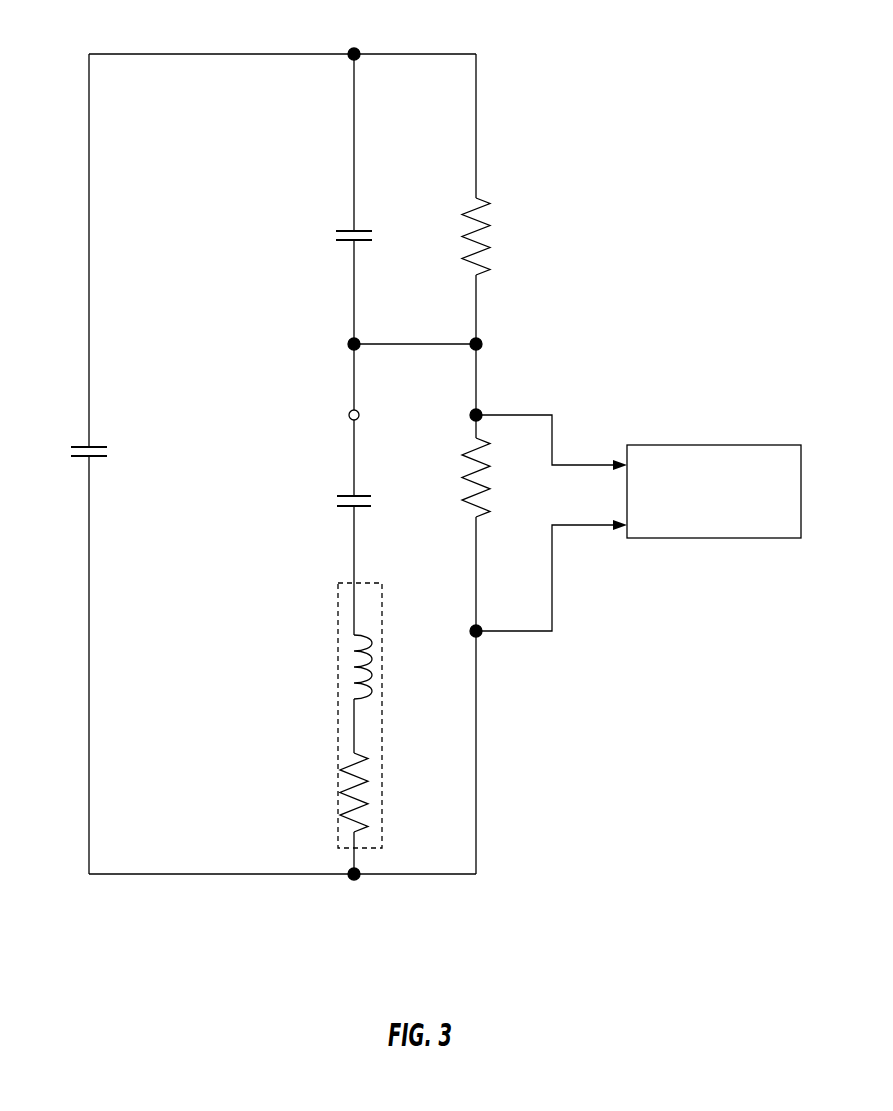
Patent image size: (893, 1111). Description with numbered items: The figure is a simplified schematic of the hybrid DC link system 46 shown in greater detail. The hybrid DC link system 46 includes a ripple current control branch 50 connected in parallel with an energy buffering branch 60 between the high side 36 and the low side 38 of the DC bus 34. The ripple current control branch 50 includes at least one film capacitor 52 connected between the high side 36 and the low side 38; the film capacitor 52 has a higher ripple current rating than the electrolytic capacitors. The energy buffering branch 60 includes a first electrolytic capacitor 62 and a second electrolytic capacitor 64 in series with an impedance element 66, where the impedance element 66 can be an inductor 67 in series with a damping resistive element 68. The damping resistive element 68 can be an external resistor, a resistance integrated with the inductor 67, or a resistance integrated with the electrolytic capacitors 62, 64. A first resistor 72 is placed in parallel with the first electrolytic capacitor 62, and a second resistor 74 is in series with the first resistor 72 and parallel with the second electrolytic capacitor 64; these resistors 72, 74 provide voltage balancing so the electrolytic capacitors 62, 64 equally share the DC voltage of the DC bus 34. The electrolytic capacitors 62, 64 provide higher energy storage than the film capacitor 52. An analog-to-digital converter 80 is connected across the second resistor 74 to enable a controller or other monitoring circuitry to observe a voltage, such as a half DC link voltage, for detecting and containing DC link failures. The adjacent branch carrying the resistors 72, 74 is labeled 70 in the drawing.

The DC bus 34 is at (373, 54).
The high side 36 is at (155, 54).
The low side 38 is at (170, 874).
The hybrid DC link system 46 is at (631, 77).
The ripple current control branch 50 is at (102, 158).
The film capacitor 52 is at (89, 497).
The energy buffering branch 60 is at (346, 125).
The first electrolytic capacitor 62 is at (352, 276).
The second electrolytic capacitor 64 is at (352, 524).
The impedance element 66 is at (382, 667).
The inductor 67 is at (352, 618).
The damping resistive element 68 is at (352, 735).
The resistor divider branch 70 is at (487, 130).
The first resistor 72 is at (478, 280).
The second resistor 74 is at (474, 535).
The analog-to-digital (A/D) converter 80 is at (713, 538).